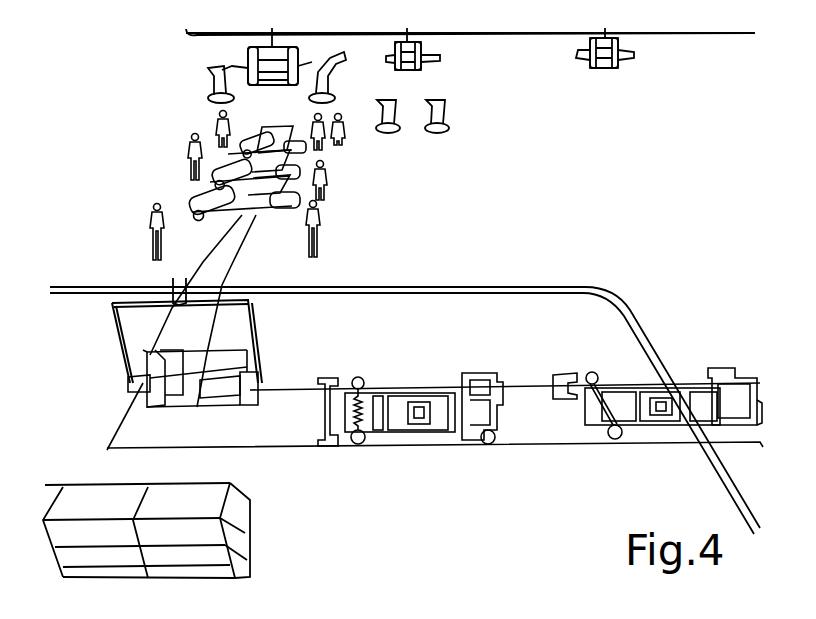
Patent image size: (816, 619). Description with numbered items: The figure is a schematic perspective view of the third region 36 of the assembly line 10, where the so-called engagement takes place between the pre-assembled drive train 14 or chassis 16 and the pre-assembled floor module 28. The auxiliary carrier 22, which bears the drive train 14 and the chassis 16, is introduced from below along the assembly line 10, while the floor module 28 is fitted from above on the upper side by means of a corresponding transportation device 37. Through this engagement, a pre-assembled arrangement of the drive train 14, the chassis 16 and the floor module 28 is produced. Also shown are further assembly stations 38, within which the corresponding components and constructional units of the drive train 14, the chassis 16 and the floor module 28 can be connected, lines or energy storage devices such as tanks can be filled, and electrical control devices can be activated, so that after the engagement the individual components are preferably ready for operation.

The assembly line 10 is at (538, 430).
The drive train 14 is at (495, 366).
The chassis 16 is at (357, 458).
The auxiliary carrier 22 is at (447, 432).
The floor module 28 is at (205, 380).
The third region 36 is at (519, 257).
The transportation device 37 is at (257, 321).
The assembly stations 38 is at (343, 188).